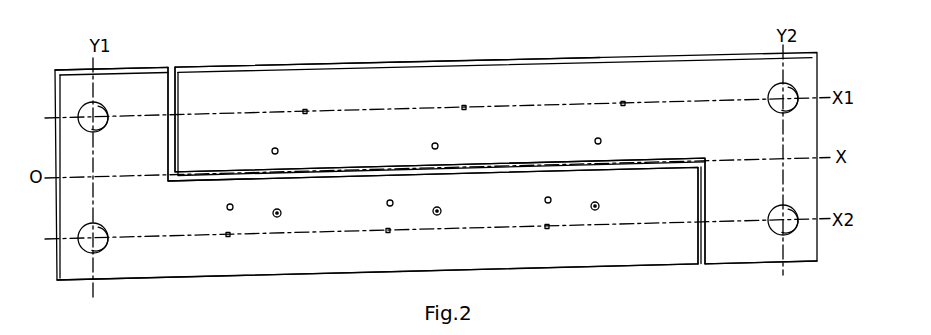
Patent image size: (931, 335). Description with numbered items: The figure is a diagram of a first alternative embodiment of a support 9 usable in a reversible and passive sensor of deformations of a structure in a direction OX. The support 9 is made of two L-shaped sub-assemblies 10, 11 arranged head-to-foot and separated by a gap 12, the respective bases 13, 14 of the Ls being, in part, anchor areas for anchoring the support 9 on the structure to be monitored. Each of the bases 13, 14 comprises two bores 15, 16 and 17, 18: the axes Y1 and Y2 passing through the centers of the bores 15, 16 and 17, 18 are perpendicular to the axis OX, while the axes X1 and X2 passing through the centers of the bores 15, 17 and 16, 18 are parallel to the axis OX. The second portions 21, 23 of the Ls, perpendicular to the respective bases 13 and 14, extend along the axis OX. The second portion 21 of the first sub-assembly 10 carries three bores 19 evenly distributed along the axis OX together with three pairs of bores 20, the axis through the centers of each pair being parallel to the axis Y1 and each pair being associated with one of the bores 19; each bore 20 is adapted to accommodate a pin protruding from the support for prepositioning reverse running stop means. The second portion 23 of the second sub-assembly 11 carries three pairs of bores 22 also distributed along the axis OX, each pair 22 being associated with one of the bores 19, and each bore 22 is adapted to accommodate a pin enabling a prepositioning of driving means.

The support 9 is at (578, 58).
The first L-shaped sub-assembly 10 is at (303, 258).
The second L-shaped sub-assembly 11 is at (420, 85).
The gap 12 is at (178, 122).
The base of first sub-assembly 13 is at (120, 70).
The base of second sub-assembly 14 is at (768, 262).
The bore 15 is at (104, 112).
The bore 16 is at (104, 247).
The bore 17 is at (771, 92).
The bore 18 is at (770, 228).
The bore 19 is at (281, 211).
The pair of bores 20 is at (228, 232).
The second portion of first sub-assembly 21 is at (517, 247).
The pair of bores 22 is at (278, 149).
The second portion of second sub-assembly 23 is at (318, 87).